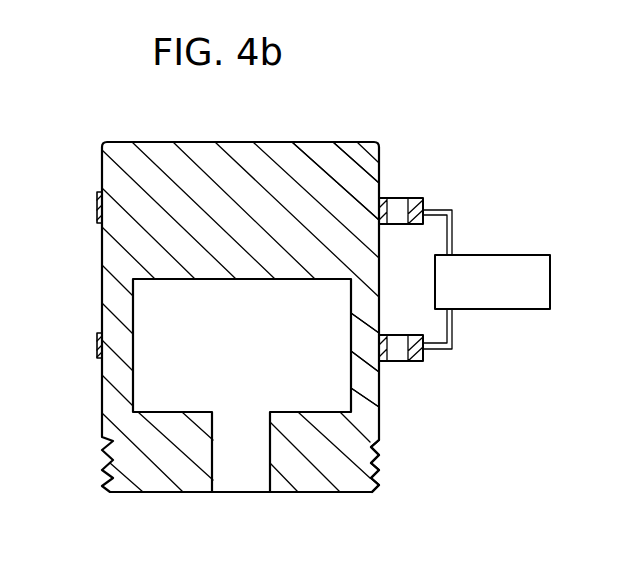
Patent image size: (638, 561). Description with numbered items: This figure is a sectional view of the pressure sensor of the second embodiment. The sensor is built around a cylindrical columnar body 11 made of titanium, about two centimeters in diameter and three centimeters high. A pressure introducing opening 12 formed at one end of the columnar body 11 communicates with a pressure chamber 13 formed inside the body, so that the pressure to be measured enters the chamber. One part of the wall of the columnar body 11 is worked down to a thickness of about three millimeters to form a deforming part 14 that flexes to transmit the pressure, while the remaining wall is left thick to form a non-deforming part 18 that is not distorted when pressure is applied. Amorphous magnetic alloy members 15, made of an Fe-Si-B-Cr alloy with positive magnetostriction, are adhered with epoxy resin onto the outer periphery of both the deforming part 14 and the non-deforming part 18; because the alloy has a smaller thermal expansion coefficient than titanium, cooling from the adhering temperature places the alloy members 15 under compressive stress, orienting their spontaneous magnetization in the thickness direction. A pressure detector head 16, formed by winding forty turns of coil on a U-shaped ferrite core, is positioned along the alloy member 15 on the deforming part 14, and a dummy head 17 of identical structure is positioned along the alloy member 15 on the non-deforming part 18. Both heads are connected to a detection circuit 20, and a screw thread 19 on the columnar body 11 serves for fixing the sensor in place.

The columnar body 11 is at (368, 432).
The pressure introducing opening 12 is at (249, 495).
The pressure chamber 13 is at (343, 400).
The deforming part 14 is at (362, 386).
The amorphous magnetic alloy member 15 is at (97, 206).
The pressure detector head 16 is at (423, 358).
The dummy head 17 is at (413, 199).
The non-deforming part 18 is at (358, 178).
The screw thread 19 is at (380, 477).
The detection circuit 20 is at (523, 255).